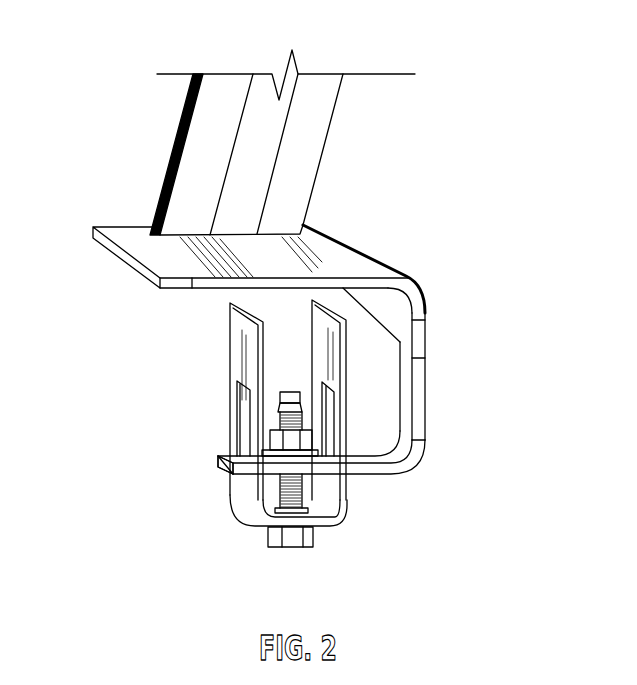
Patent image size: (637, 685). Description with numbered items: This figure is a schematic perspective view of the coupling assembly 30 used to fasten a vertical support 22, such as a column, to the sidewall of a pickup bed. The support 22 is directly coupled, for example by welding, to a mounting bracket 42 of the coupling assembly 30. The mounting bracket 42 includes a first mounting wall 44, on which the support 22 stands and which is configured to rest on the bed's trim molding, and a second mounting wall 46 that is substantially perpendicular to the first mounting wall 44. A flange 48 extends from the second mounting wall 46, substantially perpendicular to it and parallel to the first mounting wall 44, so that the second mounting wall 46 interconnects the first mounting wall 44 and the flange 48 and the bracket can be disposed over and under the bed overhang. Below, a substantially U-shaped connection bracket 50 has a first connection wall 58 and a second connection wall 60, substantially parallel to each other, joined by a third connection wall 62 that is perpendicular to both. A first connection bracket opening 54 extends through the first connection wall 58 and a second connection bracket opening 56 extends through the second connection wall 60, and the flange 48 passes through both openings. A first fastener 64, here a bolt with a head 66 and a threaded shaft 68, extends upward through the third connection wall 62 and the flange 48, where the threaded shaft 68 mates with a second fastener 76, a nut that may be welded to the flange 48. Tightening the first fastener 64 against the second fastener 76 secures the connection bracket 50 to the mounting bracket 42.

The support 22 is at (178, 123).
The coupling assembly 30 is at (472, 315).
The mounting bracket 42 is at (352, 256).
The first mounting wall 44 is at (114, 229).
The second mounting wall 46 is at (417, 388).
The flange 48 is at (376, 471).
The connection bracket 50 is at (205, 355).
The first connection bracket opening 54 is at (325, 388).
The second connection bracket opening 56 is at (248, 390).
The first connection wall 58 is at (334, 343).
The second connection wall 60 is at (240, 336).
The third connection wall 62 is at (326, 527).
The first fastener 64 is at (328, 522).
The head 66 is at (267, 538).
The threaded shaft 68 is at (283, 495).
The second fastener 76 is at (220, 465).